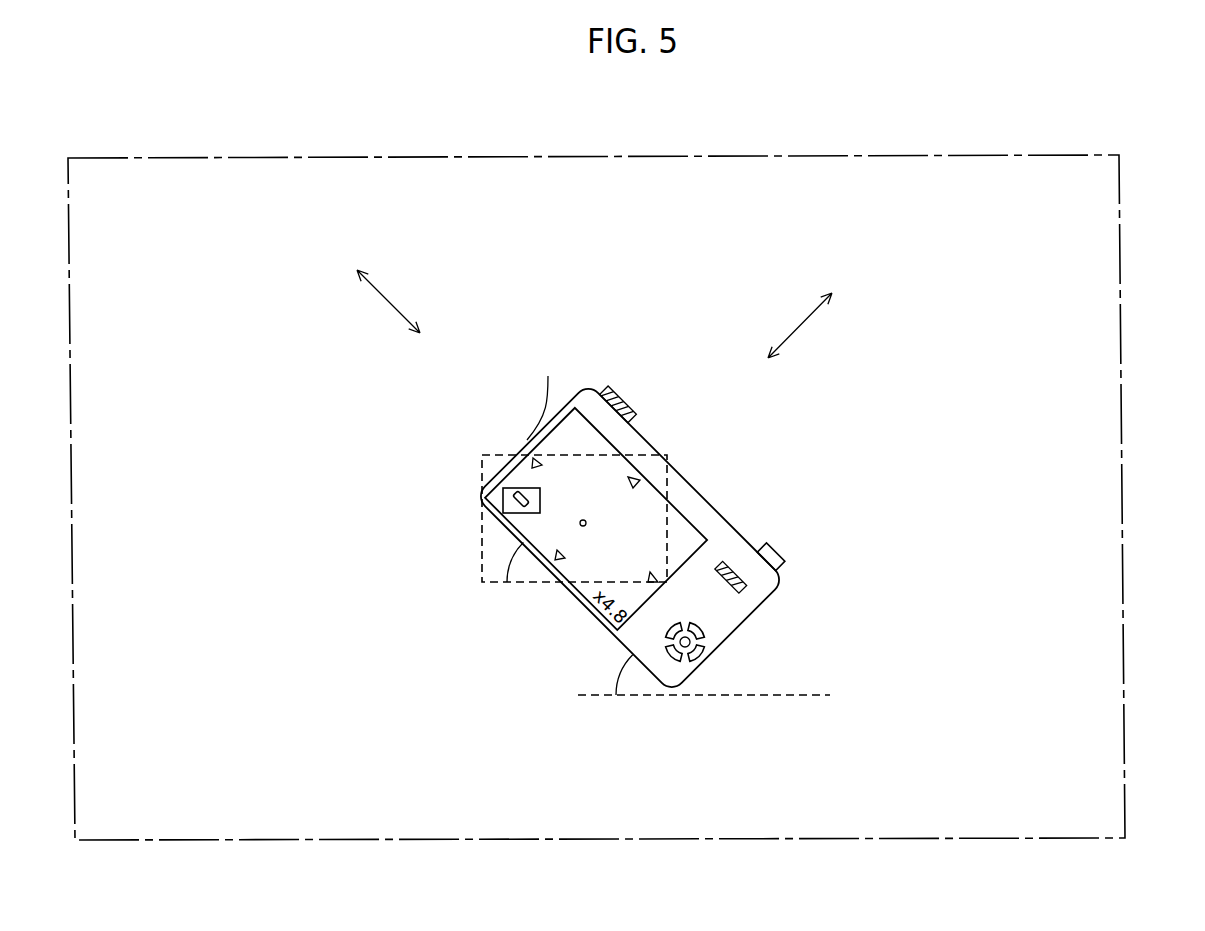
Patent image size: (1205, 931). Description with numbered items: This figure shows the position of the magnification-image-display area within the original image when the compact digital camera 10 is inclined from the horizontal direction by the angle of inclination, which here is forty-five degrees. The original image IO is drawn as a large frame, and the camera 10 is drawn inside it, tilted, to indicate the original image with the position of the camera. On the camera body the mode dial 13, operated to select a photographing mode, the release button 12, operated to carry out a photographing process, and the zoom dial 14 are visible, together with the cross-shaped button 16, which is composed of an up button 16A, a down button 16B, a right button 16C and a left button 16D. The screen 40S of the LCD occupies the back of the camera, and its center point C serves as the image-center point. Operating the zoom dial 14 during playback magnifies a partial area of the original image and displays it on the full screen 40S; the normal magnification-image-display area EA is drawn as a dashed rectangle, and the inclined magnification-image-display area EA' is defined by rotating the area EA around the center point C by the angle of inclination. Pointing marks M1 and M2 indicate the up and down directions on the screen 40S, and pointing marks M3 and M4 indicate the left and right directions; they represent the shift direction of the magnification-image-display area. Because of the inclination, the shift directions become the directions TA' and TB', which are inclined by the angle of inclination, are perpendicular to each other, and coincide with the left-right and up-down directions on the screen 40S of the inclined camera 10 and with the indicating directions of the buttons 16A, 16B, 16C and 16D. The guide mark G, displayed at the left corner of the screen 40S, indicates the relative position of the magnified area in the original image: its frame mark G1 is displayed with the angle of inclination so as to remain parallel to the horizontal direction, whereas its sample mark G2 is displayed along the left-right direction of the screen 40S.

The compact digital camera 10 is at (1097, 237).
The release button 12 is at (778, 545).
The mode dial 13 is at (624, 396).
The zoom dial 14 is at (783, 592).
The cross-shaped button 16 is at (683, 670).
The up button 16A is at (702, 630).
The down button 16B is at (663, 656).
The right button 16C is at (668, 630).
The left button 16D is at (704, 658).
The screen 40S is at (613, 437).
The guide mark G is at (486, 493).
The frame mark G1 is at (520, 488).
The sample mark G2 is at (515, 498).
The center point C is at (583, 524).
The magnification-image-display area EA is at (542, 525).
The inclined magnification-image-display area EA' is at (546, 394).
The pointing mark M1 is at (634, 480).
The pointing mark M2 is at (560, 560).
The pointing mark M3 is at (533, 460).
The pointing mark M4 is at (655, 572).
The inclined shift direction TA' is at (405, 299).
The inclined shift direction TB' is at (817, 329).